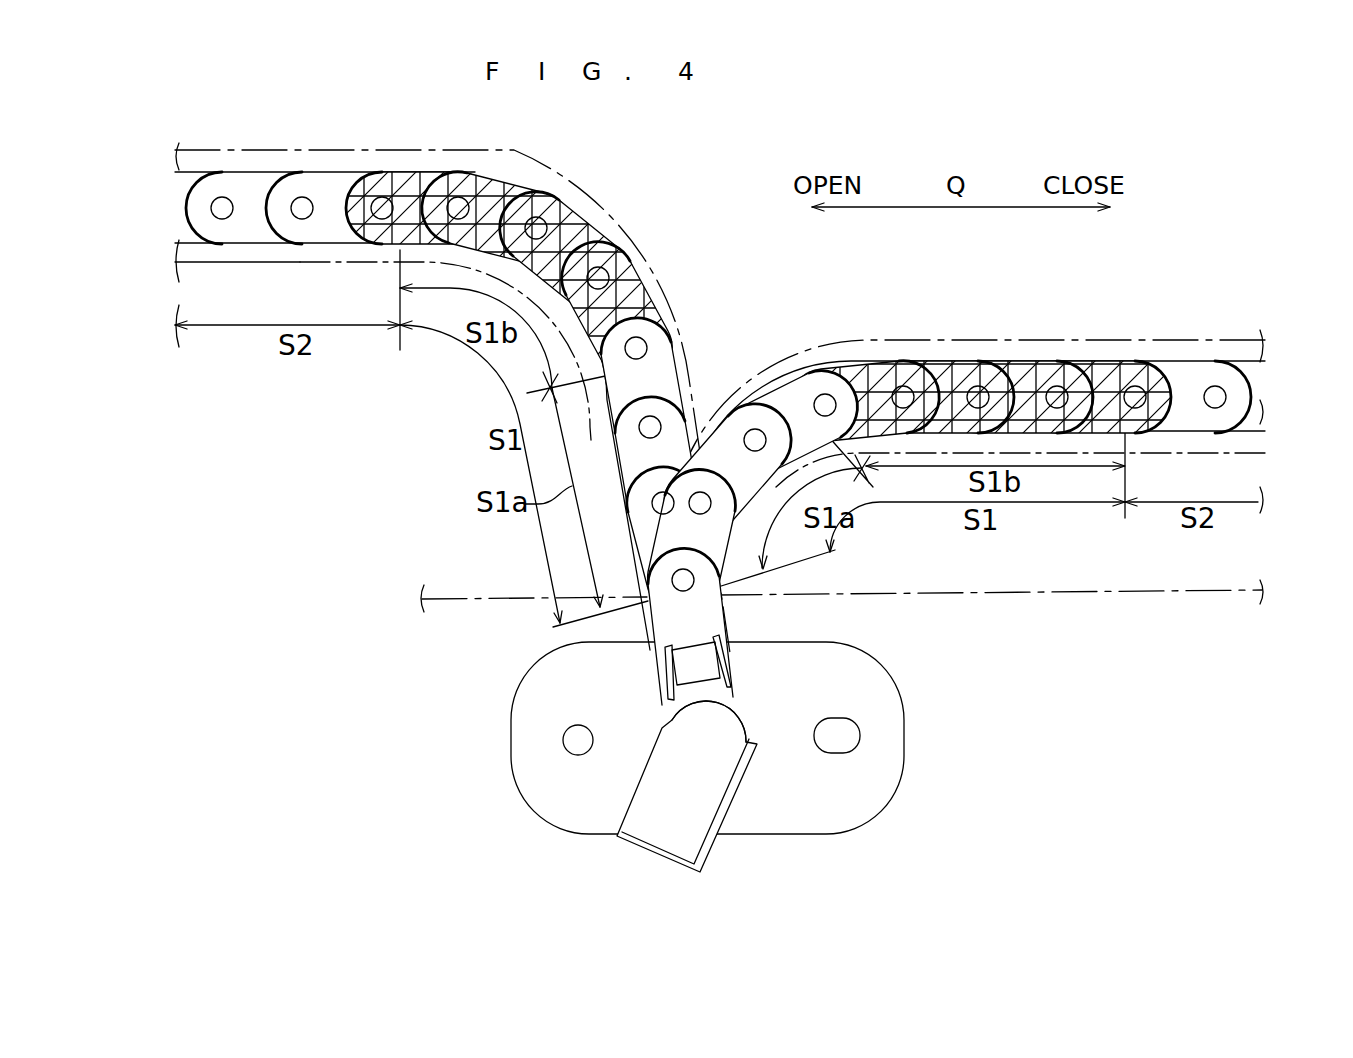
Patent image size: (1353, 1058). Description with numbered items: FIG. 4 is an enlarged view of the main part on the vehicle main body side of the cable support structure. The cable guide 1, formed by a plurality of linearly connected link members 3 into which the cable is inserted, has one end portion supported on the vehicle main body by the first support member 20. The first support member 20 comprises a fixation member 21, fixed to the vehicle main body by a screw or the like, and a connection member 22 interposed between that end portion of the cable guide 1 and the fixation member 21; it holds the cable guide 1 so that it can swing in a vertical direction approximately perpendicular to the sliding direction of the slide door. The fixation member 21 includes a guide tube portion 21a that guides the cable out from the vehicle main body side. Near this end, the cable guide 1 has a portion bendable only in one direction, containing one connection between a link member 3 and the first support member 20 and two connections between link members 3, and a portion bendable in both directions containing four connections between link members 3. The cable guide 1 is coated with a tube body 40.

The cable guide 1 is at (718, 394).
The link member 3 is at (300, 228).
The first support member 20 is at (875, 700).
The fixation member 21 is at (880, 776).
The guide tube portion 21a is at (712, 748).
The connection member 22 is at (700, 614).
The tube body 40 is at (613, 206).